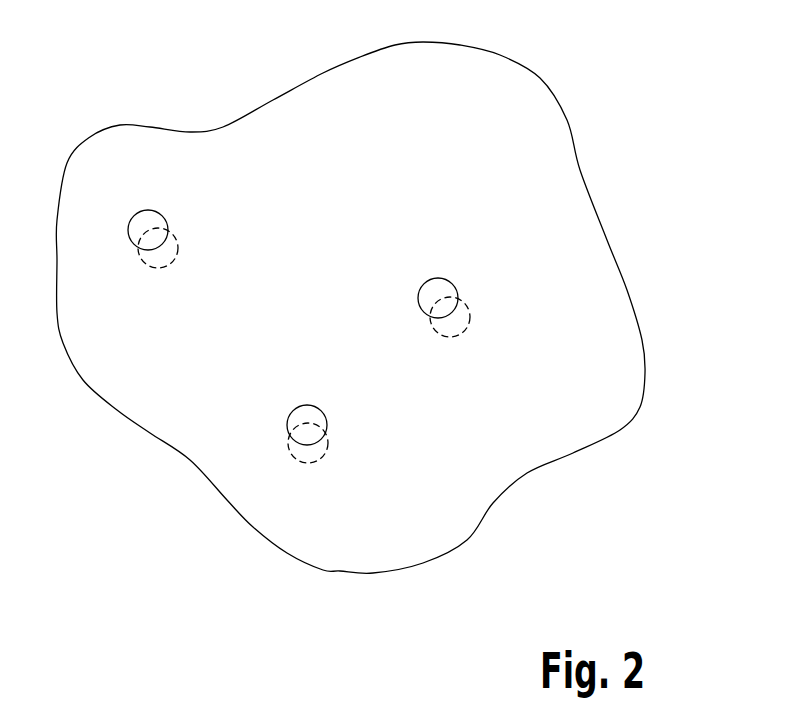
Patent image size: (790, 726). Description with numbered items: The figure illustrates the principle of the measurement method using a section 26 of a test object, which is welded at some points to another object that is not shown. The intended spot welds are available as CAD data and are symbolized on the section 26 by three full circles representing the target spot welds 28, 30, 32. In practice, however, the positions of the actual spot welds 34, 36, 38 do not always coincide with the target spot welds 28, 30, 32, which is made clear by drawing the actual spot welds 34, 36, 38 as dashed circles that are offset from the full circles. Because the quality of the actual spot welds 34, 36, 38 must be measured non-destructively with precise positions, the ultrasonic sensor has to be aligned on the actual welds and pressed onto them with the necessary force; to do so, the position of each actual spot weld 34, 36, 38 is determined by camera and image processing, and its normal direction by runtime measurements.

The section of a test object 26 is at (560, 162).
The target spot weld 28 is at (164, 218).
The target spot weld 30 is at (327, 425).
The target spot weld 32 is at (439, 278).
The actual spot weld 34 is at (178, 250).
The actual spot weld 36 is at (327, 450).
The actual spot weld 38 is at (470, 315).